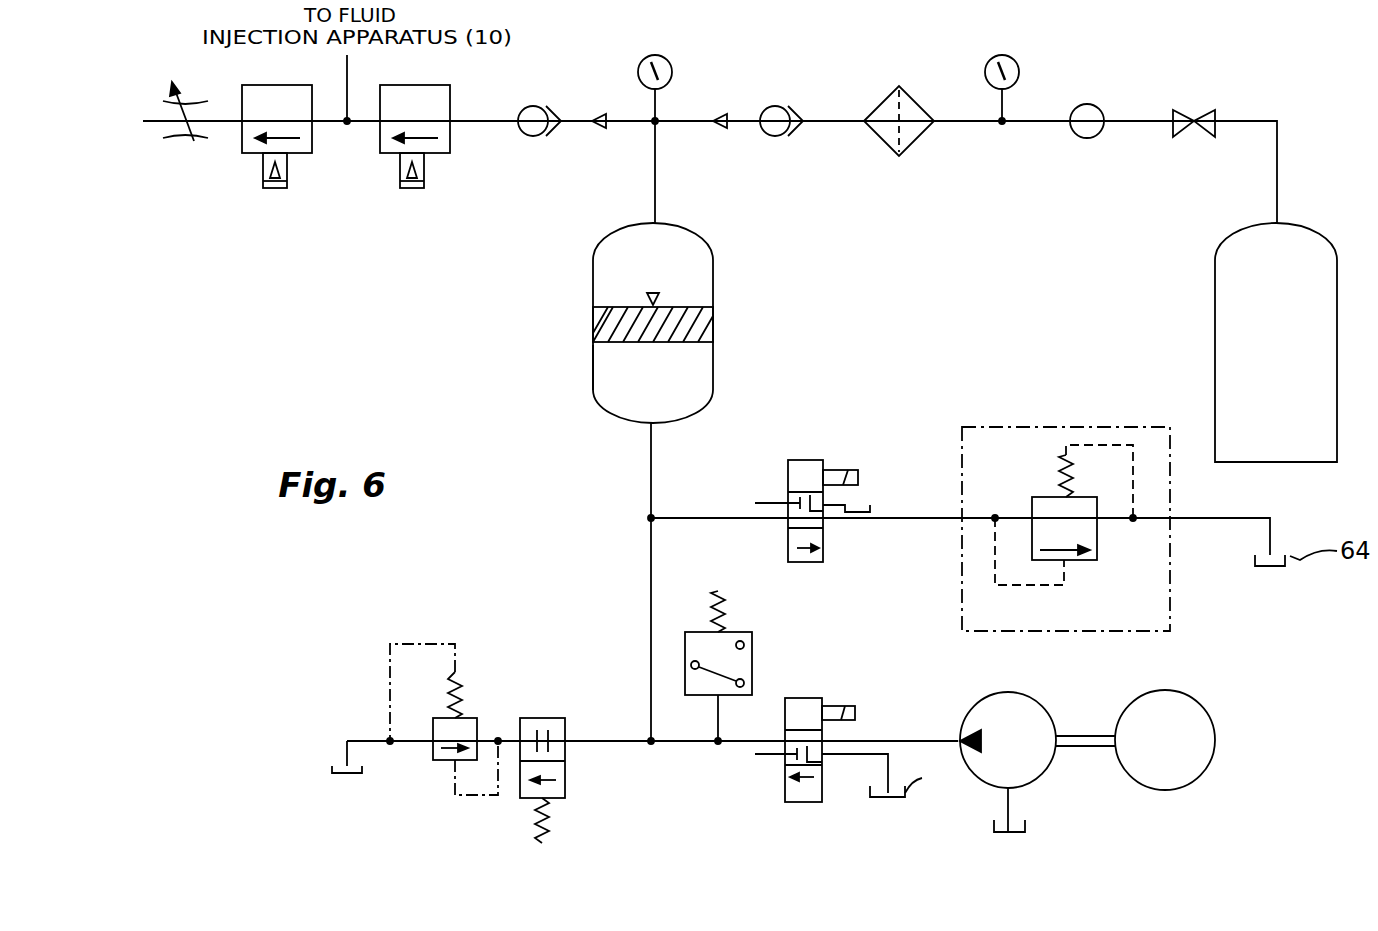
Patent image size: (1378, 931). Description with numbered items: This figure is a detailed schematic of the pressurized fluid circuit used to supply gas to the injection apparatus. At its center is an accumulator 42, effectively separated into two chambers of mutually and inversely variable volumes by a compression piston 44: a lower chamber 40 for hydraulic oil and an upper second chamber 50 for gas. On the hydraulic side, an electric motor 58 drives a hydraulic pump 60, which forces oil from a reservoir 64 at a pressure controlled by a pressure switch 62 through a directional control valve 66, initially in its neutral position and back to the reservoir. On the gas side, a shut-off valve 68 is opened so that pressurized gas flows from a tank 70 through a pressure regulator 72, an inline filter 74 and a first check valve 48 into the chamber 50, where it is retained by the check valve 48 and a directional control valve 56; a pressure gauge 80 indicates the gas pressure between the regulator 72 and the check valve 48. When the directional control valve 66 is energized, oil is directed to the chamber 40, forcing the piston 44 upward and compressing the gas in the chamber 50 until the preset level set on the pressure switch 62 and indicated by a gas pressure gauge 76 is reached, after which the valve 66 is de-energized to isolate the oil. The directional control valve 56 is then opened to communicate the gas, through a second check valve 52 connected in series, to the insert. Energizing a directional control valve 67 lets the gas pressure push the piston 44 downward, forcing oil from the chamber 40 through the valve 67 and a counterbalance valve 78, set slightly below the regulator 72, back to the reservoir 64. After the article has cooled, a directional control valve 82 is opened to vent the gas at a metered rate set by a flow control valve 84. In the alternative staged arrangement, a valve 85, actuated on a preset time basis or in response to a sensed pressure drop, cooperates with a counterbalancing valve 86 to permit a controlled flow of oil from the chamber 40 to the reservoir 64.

The chamber 40 is at (604, 384).
The accumulator 42 is at (586, 359).
The compression piston 44 is at (600, 307).
The second chamber 50 is at (605, 255).
The first check valve 48 is at (760, 112).
The second check valve 52 is at (522, 110).
The directional control valve 56 is at (430, 85).
The electric motor 58 is at (1205, 708).
The hydraulic pump 60 is at (1045, 705).
The pressure switch 62 is at (752, 662).
The reservoir 64 is at (1025, 827).
The directional control valve 66 is at (808, 698).
The directional control valve 67 is at (810, 562).
The shut-off valve 68 is at (1187, 110).
The tank 70 is at (1310, 233).
The pressure regulator 72 is at (1100, 106).
The inline filter 74 is at (917, 102).
The gas pressure gauge 76 is at (670, 64).
The counterbalance valve 78 is at (1005, 427).
The pressure gauge 80 is at (1016, 64).
The directional control valve 82 is at (285, 85).
The flow control valve 84 is at (188, 102).
The valve 85 is at (566, 804).
The counterbalancing valve 86 is at (433, 761).